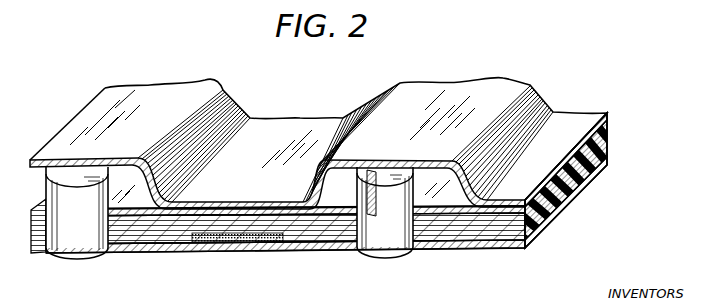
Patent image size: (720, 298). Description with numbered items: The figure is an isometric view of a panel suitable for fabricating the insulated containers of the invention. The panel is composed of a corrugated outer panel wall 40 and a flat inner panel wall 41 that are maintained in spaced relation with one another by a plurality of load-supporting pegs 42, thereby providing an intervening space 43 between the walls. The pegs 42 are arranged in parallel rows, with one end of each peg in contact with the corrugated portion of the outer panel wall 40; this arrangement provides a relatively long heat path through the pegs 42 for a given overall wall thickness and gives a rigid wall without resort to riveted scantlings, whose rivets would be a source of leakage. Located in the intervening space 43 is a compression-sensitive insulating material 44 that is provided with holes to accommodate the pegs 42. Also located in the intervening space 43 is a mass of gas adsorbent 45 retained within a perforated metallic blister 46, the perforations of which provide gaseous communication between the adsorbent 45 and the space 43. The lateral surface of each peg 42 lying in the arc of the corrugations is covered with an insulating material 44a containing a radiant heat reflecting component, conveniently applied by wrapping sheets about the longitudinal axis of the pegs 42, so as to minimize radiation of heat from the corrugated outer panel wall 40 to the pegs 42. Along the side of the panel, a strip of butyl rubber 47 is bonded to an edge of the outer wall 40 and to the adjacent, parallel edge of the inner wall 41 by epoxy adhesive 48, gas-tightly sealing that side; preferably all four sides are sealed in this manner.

The outer panel wall 40 is at (318, 178).
The inner panel wall 41 is at (351, 201).
The load-supporting pegs 42 is at (229, 212).
The intervening space 43 is at (463, 192).
The compression-sensitive insulating material 44 is at (285, 251).
The insulating material containing a radiant heat reflecting component 44a is at (388, 172).
The gas adsorbent 45 is at (262, 244).
The perforated metallic blister 46 is at (203, 235).
The strip of butyl rubber 47 is at (520, 243).
The epoxy adhesive 48 is at (608, 162).